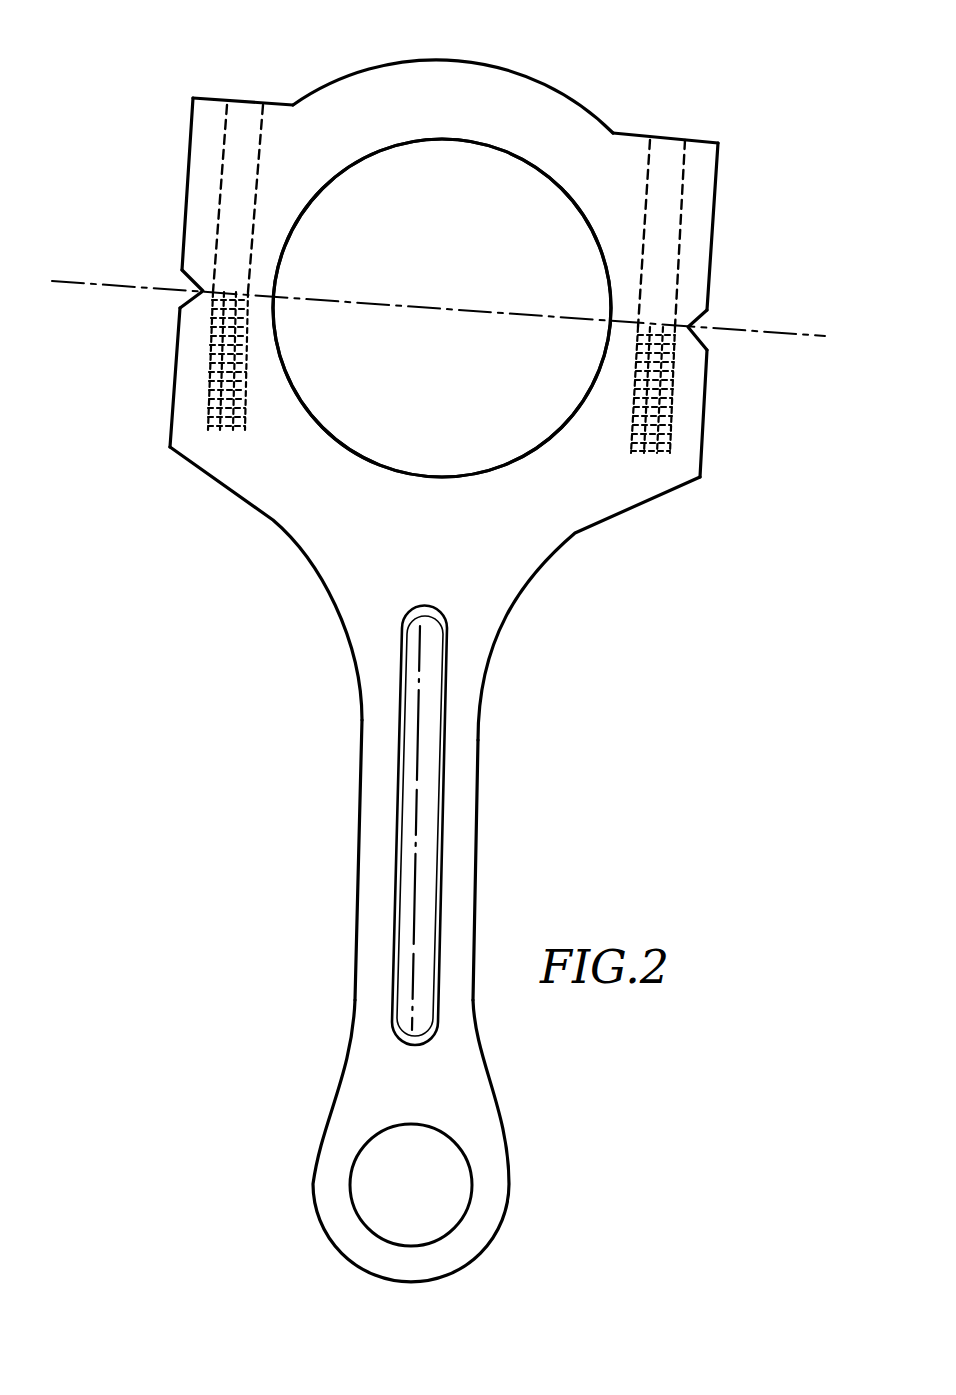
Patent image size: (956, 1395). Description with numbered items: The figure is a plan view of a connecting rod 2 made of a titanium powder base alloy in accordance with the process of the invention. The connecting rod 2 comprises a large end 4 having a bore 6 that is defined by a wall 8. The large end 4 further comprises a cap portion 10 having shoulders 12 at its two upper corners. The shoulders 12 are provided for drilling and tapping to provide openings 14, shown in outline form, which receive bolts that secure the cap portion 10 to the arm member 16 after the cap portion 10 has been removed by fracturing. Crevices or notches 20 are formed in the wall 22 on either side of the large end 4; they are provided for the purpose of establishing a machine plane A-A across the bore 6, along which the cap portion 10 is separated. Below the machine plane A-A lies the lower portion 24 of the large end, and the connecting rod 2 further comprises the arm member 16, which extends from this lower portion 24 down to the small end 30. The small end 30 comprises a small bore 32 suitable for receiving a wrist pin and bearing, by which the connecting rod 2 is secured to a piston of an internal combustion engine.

The connecting rod 2 is at (438, 646).
The large end 4 is at (722, 171).
The bore 6 is at (391, 268).
The wall 8 is at (522, 166).
The cap portion 10 is at (507, 67).
The shoulders 12 is at (213, 98).
The openings 14 is at (217, 182).
The arm member 16 is at (480, 752).
The crevices or notches 20 is at (180, 281).
The wall 22 is at (175, 385).
The lower portion 24 is at (310, 532).
The small end 30 is at (513, 1180).
The small bore 32 is at (357, 1212).